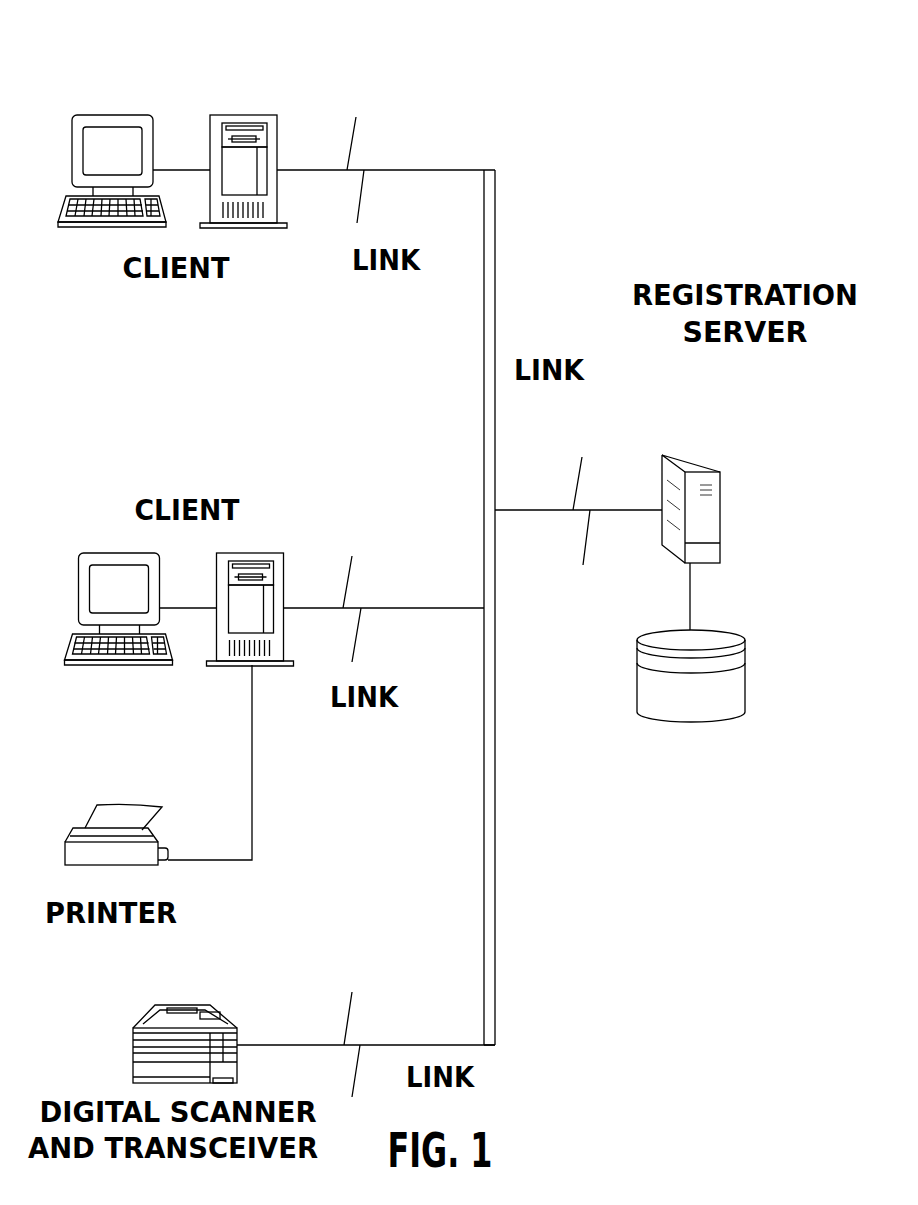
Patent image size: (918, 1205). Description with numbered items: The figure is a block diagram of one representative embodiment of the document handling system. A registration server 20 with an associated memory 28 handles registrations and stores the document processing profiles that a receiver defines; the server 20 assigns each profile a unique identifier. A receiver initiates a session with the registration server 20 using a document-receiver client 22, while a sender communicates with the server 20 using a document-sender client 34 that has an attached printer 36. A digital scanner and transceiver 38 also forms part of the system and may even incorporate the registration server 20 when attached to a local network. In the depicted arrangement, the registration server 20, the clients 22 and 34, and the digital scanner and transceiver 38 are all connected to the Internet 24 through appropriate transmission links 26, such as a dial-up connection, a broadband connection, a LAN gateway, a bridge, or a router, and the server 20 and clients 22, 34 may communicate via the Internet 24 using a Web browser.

The registration server 20 is at (690, 453).
The document-receiver client 22 is at (245, 115).
The Internet 24 is at (491, 170).
The transmission links 26 is at (407, 170).
The memory 28 is at (723, 642).
The document-sender client 34 is at (250, 553).
The printer 36 is at (108, 805).
The digital scanner and transceiver 38 is at (217, 1005).